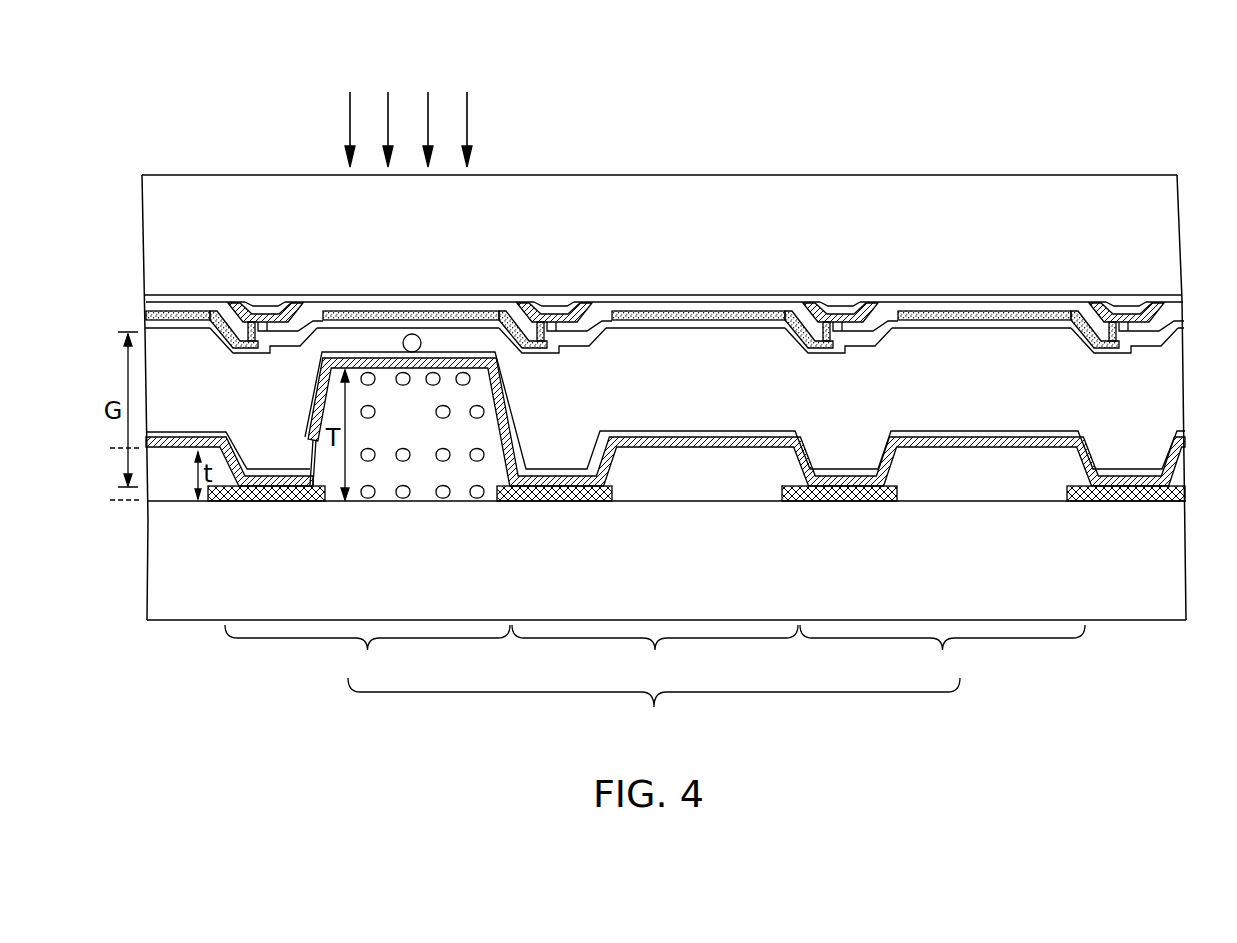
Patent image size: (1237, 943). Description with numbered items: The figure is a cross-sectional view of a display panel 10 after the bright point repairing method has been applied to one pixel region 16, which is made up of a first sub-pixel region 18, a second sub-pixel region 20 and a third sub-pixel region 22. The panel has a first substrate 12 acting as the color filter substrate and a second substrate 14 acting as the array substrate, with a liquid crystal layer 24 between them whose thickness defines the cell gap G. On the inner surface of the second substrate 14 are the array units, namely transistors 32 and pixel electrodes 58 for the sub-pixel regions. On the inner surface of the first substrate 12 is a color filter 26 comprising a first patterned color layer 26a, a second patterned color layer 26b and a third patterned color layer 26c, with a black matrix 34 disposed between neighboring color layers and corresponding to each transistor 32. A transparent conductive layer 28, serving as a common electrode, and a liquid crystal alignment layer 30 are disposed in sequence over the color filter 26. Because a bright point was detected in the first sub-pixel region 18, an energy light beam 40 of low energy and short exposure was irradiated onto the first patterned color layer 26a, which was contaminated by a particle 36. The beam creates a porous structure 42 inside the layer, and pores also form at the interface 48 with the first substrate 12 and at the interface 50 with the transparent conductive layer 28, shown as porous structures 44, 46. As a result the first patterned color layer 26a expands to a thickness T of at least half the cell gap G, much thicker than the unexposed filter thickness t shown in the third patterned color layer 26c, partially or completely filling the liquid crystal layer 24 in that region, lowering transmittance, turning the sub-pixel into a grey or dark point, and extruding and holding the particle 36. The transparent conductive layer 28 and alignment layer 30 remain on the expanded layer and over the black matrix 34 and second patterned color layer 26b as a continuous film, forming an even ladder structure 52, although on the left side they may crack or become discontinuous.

The display panel 10 is at (1150, 98).
The first substrate 12 is at (636, 576).
The second substrate 14 is at (636, 236).
The pixel region 16 is at (654, 709).
The first sub-pixel region 18 is at (367, 654).
The second sub-pixel region 20 is at (655, 653).
The third sub-pixel region 22 is at (942, 653).
The liquid crystal layer 24 is at (1158, 380).
The color filter 26 is at (110, 500).
The first patterned color layer 26a is at (391, 442).
The second patterned color layer 26b is at (669, 486).
The third patterned color layer 26c is at (147, 482).
The transparent conductive layer 28 is at (1176, 452).
The liquid crystal alignment layer 30 is at (1088, 441).
The transistor 32 is at (839, 280).
The black matrix 34 is at (1183, 497).
The particle 36 is at (413, 334).
The energy light beam 40 is at (467, 108).
The porous structure 42 is at (482, 413).
The porous structure 44 is at (470, 378).
The porous structure 46 is at (442, 498).
The interface 48 is at (385, 503).
The interface 50 is at (455, 357).
The ladder structure 52 is at (532, 452).
The pixel electrode 58 is at (1040, 312).